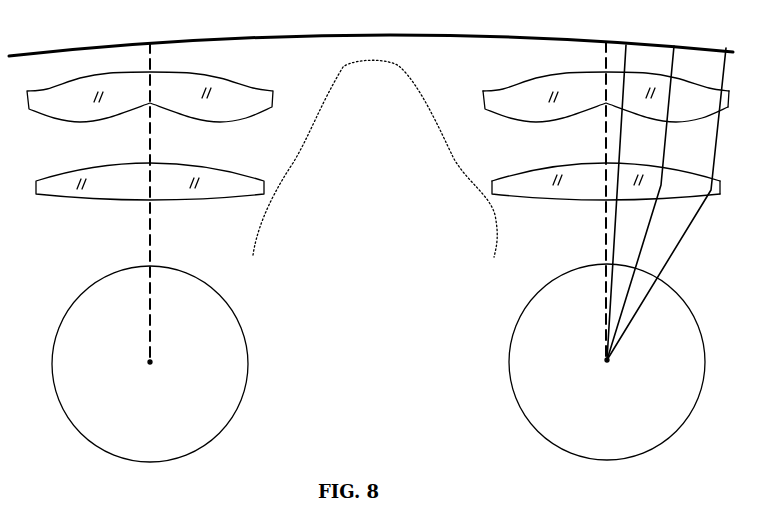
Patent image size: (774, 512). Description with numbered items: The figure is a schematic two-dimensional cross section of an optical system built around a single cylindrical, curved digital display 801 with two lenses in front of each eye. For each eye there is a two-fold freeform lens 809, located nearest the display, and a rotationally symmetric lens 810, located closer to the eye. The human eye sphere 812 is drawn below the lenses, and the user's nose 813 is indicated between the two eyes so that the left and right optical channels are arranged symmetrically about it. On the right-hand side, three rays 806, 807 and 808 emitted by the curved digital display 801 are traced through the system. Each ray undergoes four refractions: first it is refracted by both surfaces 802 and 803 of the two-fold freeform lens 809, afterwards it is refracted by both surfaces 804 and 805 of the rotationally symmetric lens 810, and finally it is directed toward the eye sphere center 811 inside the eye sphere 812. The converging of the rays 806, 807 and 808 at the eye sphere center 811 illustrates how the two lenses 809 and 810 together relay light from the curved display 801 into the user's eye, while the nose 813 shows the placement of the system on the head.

The curved digital display 801 is at (45, 50).
The first surface of 2-fold freeform lens 802 is at (530, 83).
The second surface of 2-fold freeform lens 803 is at (525, 116).
The first surface of rotationally symmetric lens 804 is at (525, 168).
The second surface of rotationally symmetric lens 805 is at (534, 198).
The ray 806 is at (727, 52).
The ray 807 is at (677, 50).
The ray 808 is at (628, 47).
The 2-fold freeform lens 809 is at (724, 95).
The rotationally symmetric lens 810 is at (719, 185).
The eye sphere center 811 is at (611, 362).
The human eye sphere 812 is at (706, 365).
The user's nose 813 is at (327, 93).